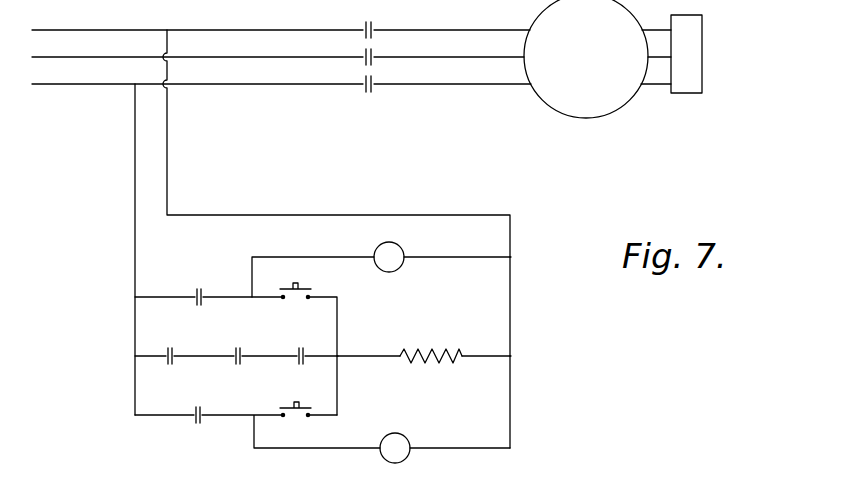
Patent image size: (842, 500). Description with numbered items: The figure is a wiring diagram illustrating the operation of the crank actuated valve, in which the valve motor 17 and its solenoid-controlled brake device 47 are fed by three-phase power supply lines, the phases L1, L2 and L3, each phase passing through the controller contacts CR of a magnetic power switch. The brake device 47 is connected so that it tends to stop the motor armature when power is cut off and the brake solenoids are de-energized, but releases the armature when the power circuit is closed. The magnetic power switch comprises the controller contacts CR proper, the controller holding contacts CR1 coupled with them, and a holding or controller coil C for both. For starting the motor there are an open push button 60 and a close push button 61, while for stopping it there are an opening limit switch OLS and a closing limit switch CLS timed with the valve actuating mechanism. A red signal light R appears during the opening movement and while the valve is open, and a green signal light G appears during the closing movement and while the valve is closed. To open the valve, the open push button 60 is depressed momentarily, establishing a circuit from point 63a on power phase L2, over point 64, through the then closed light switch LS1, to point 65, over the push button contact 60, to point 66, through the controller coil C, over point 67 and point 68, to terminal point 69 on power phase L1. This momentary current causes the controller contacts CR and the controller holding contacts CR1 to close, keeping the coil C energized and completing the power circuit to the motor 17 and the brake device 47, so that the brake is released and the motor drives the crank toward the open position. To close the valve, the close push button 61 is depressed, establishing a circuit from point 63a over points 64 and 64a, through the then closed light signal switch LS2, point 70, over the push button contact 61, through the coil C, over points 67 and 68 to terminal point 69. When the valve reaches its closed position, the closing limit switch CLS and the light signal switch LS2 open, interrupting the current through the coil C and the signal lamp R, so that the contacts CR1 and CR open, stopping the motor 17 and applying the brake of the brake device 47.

The valve motor 17 is at (606, 119).
The brake device 47 is at (702, 56).
The terminal point 69 is at (181, 19).
The point 63a is at (134, 86).
The point 64 is at (134, 298).
The point 64a is at (134, 357).
The point 65 is at (262, 298).
The point 66 is at (337, 356).
The point 67 is at (510, 357).
The point 68 is at (510, 258).
The point 70 is at (254, 418).
The open push button 60 is at (291, 300).
The close push button 61 is at (291, 419).
The controller contacts CR is at (383, 71).
The controller holding contacts CR1 is at (160, 350).
The light switch LS1 is at (196, 291).
The light signal switch LS2 is at (193, 409).
The opening limit switch OLS is at (230, 350).
The closing limit switch CLS is at (299, 350).
The controller coil C is at (431, 368).
The green signal light G is at (389, 257).
The red signal light R is at (395, 448).
The power phase L1 is at (351, 23).
The power phase L2 is at (351, 77).
The power phase L3 is at (351, 50).